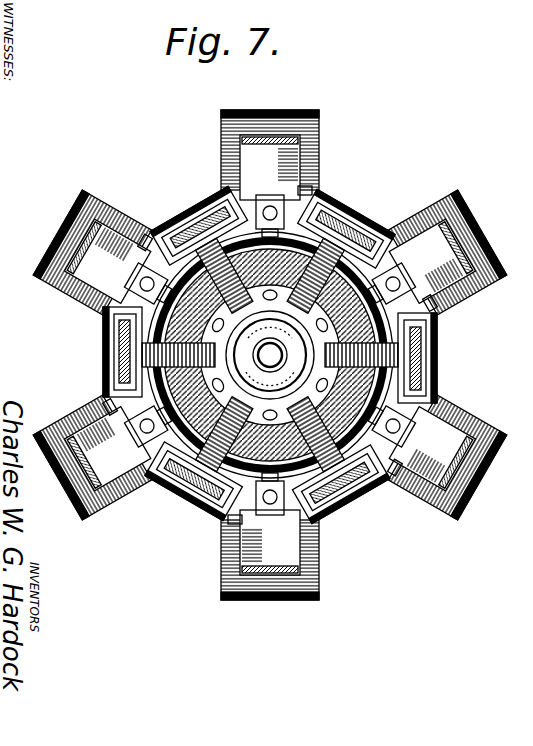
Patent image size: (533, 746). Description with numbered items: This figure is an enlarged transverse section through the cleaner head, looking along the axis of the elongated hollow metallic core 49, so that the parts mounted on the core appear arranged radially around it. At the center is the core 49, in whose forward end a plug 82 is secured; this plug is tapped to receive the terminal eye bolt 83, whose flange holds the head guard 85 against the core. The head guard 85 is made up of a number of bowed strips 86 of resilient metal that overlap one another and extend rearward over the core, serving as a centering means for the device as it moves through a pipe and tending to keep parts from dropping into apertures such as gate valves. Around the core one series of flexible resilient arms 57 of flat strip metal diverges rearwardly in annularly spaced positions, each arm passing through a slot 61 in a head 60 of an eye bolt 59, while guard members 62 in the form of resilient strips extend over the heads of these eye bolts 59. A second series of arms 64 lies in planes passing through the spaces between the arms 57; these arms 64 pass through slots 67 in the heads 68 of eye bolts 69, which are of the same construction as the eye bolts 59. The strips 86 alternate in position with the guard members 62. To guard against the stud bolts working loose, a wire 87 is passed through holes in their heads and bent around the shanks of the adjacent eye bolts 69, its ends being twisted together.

The hollow metallic core 49 is at (270, 355).
The flexible resilient arms 57 is at (355, 205).
The eye bolts 59 is at (375, 222).
The heads 60 is at (372, 222).
The slots 61 is at (350, 212).
The guard members 62 is at (324, 216).
The arms 64 is at (245, 158).
The slots 67 is at (245, 196).
The heads 68 is at (294, 212).
The eye bolts 69 is at (115, 408).
The plug 82 is at (263, 355).
The terminal eye bolt 83 is at (270, 355).
The head guard 85 is at (269, 356).
The bowed strips 86 is at (270, 118).
The wire 87 is at (136, 305).